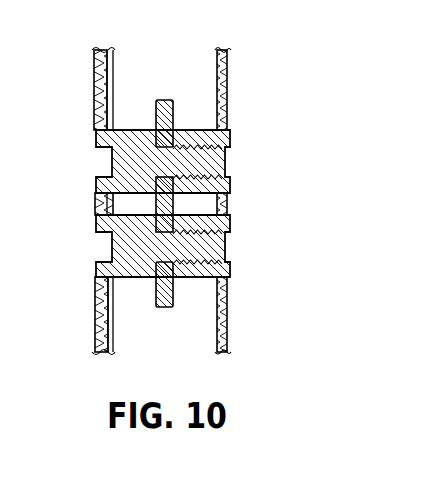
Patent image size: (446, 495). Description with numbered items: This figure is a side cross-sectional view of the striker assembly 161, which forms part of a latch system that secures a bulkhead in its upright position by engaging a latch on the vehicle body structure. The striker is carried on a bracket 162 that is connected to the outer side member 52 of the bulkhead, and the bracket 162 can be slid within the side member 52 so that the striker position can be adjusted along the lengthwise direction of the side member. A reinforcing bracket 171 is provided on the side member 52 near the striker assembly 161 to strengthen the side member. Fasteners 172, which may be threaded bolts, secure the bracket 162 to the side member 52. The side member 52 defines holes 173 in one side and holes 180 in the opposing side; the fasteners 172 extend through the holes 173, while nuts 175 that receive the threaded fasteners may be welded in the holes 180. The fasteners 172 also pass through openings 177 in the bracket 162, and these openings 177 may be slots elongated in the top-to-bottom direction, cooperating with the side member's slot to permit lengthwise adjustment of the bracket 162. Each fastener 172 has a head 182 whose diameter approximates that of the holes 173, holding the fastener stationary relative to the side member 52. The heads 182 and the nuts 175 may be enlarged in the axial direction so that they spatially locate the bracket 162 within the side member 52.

The outer side member 52 is at (227, 90).
The striker assembly 161 is at (177, 177).
The bracket 162 is at (163, 307).
The bracket 171 is at (97, 320).
The fasteners 172 is at (97, 142).
The holes 173 is at (95, 195).
The nuts 175 is at (233, 187).
The openings 177 is at (155, 130).
The holes 180 is at (217, 130).
The head 182 is at (110, 245).